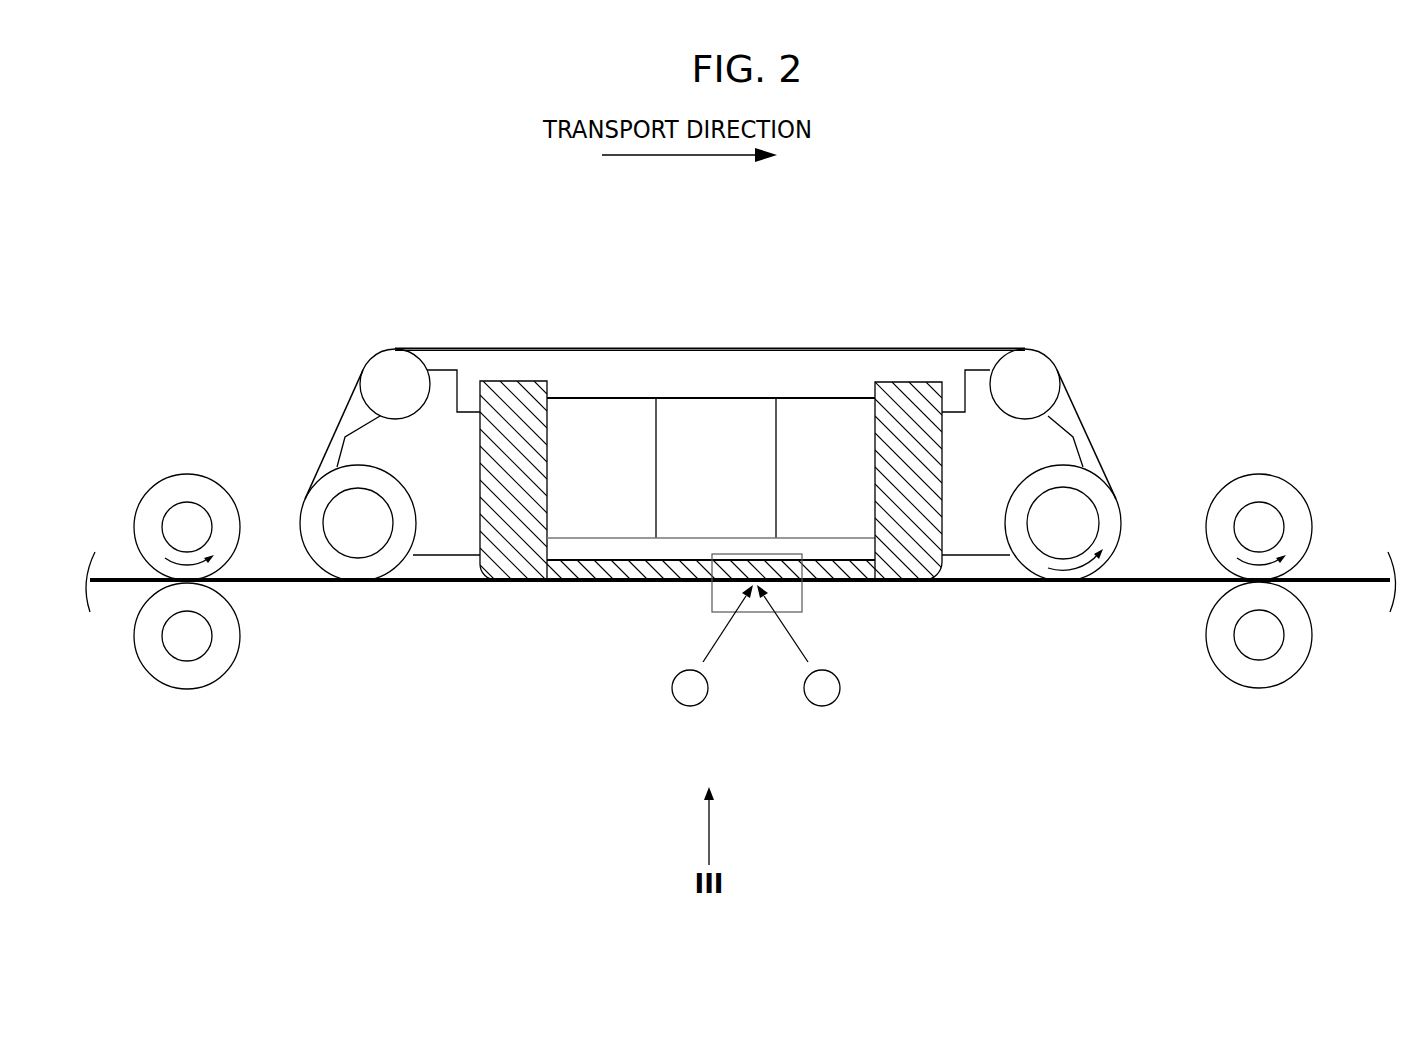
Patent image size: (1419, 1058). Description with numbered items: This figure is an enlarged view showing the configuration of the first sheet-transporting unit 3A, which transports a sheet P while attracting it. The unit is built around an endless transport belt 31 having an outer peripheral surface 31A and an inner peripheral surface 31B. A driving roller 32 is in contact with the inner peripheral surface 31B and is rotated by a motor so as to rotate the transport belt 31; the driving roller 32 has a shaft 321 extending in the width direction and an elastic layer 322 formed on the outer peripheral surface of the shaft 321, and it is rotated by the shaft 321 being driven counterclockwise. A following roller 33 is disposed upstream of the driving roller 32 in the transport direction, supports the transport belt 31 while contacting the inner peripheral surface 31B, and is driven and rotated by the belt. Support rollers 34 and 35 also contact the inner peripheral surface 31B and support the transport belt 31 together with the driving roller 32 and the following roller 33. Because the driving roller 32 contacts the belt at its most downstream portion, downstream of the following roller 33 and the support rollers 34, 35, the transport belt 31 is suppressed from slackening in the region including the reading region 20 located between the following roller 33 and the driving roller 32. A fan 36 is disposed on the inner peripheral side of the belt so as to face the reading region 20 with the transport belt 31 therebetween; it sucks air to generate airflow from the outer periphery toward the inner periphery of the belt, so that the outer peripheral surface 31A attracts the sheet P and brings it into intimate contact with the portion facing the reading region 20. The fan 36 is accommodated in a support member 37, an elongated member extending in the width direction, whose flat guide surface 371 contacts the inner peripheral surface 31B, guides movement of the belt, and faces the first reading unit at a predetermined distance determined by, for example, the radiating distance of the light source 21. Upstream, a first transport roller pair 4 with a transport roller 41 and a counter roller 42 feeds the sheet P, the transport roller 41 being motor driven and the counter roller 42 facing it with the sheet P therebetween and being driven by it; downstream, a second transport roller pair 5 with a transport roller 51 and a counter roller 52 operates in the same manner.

The first sheet-transporting unit 3A is at (330, 309).
The transport belt 31 is at (710, 374).
The outer peripheral surface 31A is at (555, 348).
The inner peripheral surface 31B is at (470, 362).
The driving roller 32 is at (1104, 486).
The shaft 321 is at (1087, 521).
The elastic layer 322 is at (1107, 535).
The following roller 33 is at (350, 522).
The support roller 34 is at (388, 362).
The support roller 35 is at (1037, 365).
The fan 36 is at (733, 427).
The support member 37 is at (918, 395).
The guide surface 371 is at (873, 582).
The first transport roller pair 4 is at (150, 450).
The transport roller 41 is at (217, 483).
The counter roller 42 is at (177, 688).
The second transport roller pair 5 is at (1318, 440).
The transport roller 51 is at (1257, 477).
The counter roller 52 is at (1303, 670).
The reading region 20 is at (802, 597).
The light source 21 is at (672, 690).
The sheet P is at (442, 588).